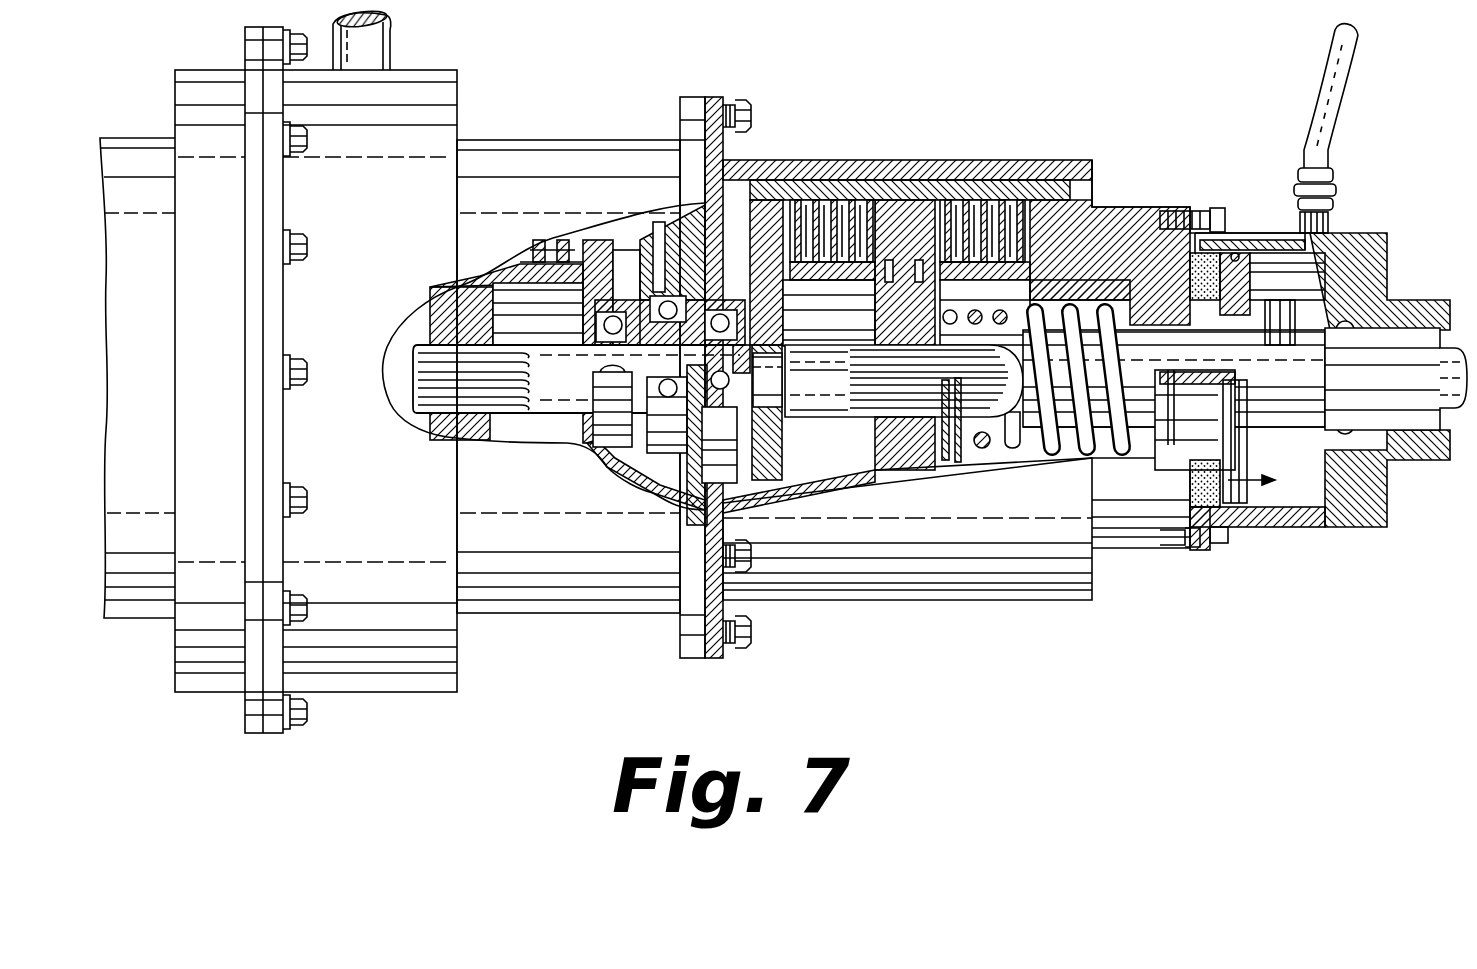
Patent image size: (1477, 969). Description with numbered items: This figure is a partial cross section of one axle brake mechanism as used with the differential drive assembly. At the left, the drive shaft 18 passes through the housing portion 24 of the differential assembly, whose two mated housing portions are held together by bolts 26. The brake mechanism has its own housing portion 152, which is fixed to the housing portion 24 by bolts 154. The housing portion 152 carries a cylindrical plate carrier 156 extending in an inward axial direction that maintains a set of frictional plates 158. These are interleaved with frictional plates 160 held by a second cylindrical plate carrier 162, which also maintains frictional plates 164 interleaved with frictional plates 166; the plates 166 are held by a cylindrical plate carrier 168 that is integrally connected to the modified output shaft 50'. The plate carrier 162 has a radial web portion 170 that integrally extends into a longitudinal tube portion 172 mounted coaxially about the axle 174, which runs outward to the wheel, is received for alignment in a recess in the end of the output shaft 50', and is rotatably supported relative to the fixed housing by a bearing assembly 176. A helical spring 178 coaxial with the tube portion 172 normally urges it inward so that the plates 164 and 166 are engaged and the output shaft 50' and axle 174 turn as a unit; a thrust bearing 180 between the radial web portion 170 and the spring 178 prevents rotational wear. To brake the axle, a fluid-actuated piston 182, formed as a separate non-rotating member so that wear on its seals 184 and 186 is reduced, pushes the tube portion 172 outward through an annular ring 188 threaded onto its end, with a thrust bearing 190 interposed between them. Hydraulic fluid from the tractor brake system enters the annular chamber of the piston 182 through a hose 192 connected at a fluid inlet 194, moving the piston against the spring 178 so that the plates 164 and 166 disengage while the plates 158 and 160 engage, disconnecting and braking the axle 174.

The drive shaft 18 is at (395, 47).
The housing portion 24 is at (530, 140).
The bolts 26 is at (308, 138).
The modified output shaft 50' is at (564, 356).
The housing portion 152 is at (915, 160).
The bolts 154 is at (750, 112).
The cylindrical plate carrier 156 is at (1035, 275).
The frictional plates 158 is at (960, 200).
The frictional plates 160 is at (945, 236).
The cylindrical plate carrier 162 is at (1080, 162).
The frictional plates 164 is at (829, 313).
The frictional plates 166 is at (815, 200).
The cylindrical plate carrier 168 is at (905, 272).
The radial web portion 170 is at (868, 455).
The longitudinal tube portion 172 is at (985, 448).
The axle 174 is at (830, 388).
The bearing assembly 176 is at (1345, 462).
The helical spring 178 is at (1050, 450).
The thrust bearing 180 is at (945, 462).
The fluid-actuated piston 182 is at (1252, 275).
The seal 184 is at (1190, 472).
The seal 186 is at (1240, 515).
The annular ring 188 is at (1322, 275).
The thrust bearing 190 is at (1295, 388).
The hose 192 is at (1312, 110).
The fluid inlet 194 is at (1255, 235).